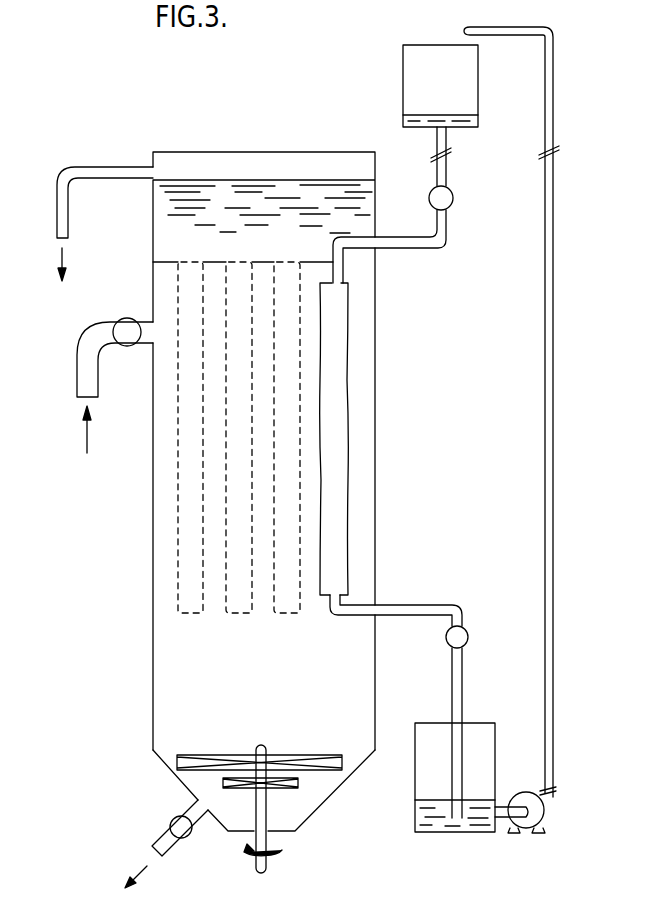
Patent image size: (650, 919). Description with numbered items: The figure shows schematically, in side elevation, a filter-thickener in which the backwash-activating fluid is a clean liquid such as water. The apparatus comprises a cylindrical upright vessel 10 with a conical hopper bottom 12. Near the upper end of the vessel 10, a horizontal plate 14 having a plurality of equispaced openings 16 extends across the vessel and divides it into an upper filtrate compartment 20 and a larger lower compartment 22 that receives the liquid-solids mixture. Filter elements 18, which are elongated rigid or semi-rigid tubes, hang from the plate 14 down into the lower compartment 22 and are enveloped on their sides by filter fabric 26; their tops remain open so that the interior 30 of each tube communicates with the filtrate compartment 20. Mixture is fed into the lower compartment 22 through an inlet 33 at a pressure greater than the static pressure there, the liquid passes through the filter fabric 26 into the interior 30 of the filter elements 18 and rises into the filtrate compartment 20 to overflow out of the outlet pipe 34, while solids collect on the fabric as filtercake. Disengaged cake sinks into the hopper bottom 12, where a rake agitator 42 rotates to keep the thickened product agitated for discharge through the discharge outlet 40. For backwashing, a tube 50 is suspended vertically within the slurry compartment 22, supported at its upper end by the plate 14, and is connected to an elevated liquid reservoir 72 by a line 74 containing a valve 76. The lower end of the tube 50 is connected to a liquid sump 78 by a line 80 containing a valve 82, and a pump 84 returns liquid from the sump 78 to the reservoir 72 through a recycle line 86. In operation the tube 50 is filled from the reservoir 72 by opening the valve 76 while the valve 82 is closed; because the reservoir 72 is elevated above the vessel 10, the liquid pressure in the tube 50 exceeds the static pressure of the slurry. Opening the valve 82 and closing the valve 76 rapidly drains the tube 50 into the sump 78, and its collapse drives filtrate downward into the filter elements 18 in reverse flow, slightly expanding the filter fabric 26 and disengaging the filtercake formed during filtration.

The vessel 10 is at (152, 557).
The conical hopper bottom 12 is at (328, 795).
The horizontal plate 14 is at (317, 262).
The openings 16 is at (192, 273).
The filter elements 18 is at (177, 470).
The upper filtrate compartment 20 is at (270, 252).
The lower compartment 22 is at (280, 694).
The filter fabric 26 is at (177, 513).
The interior of the tubes 30 is at (240, 420).
The inlet 33 is at (77, 378).
The outlet pipe 34 is at (57, 226).
The discharge outlet 40 is at (172, 846).
The rake agitator 42 is at (318, 758).
The tube 50 is at (348, 420).
The liquid reservoir 72 is at (403, 80).
The line 74 is at (419, 249).
The valve 76 is at (453, 198).
The liquid sump 78 is at (463, 833).
The line 80 is at (410, 605).
The valve 82 is at (463, 632).
The pump 84 is at (545, 818).
The recycle line 86 is at (545, 508).